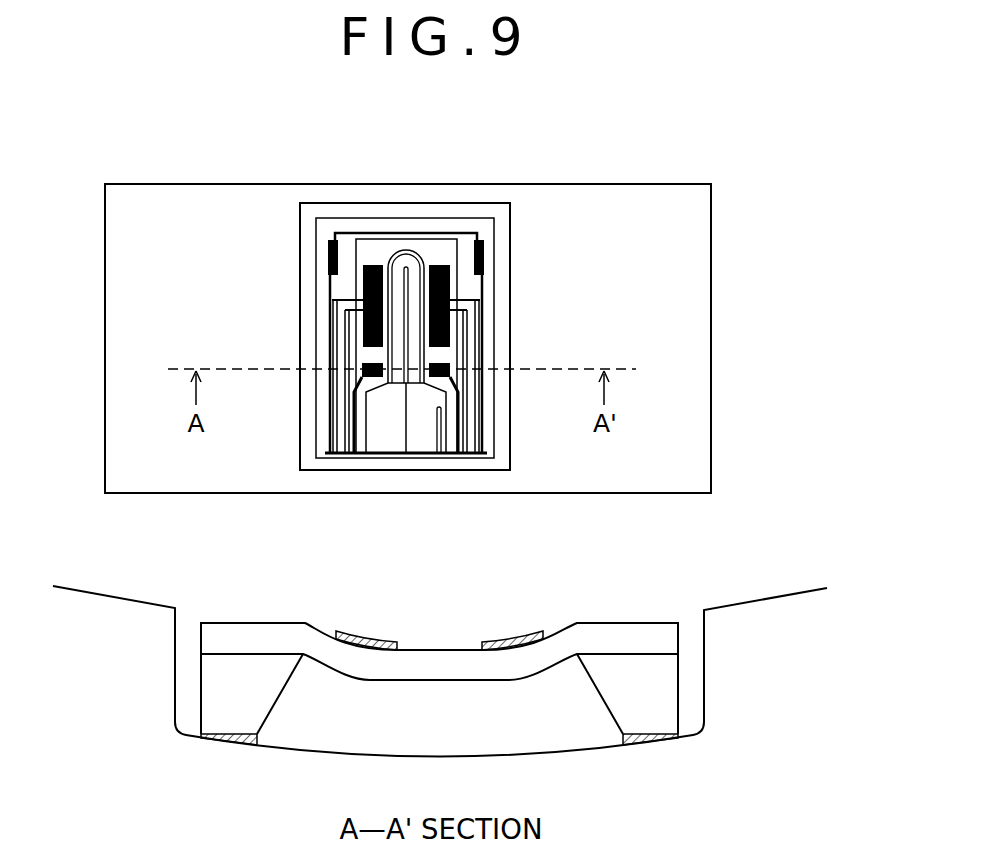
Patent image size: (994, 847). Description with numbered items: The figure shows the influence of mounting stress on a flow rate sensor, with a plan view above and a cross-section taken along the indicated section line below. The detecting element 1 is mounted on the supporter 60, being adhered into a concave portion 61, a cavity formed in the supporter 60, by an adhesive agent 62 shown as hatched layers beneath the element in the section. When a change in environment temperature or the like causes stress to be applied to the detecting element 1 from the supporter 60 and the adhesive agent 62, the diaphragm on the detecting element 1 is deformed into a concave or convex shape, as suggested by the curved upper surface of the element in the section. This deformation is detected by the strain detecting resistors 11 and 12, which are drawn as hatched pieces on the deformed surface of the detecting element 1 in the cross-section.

The detecting element 1 is at (316, 222).
The strain detecting resistor 11 is at (371, 630).
The strain detecting resistor 12 is at (510, 632).
The supporter 60 is at (711, 228).
The concave portion 61 is at (510, 274).
The adhesive agent 62 is at (642, 750).